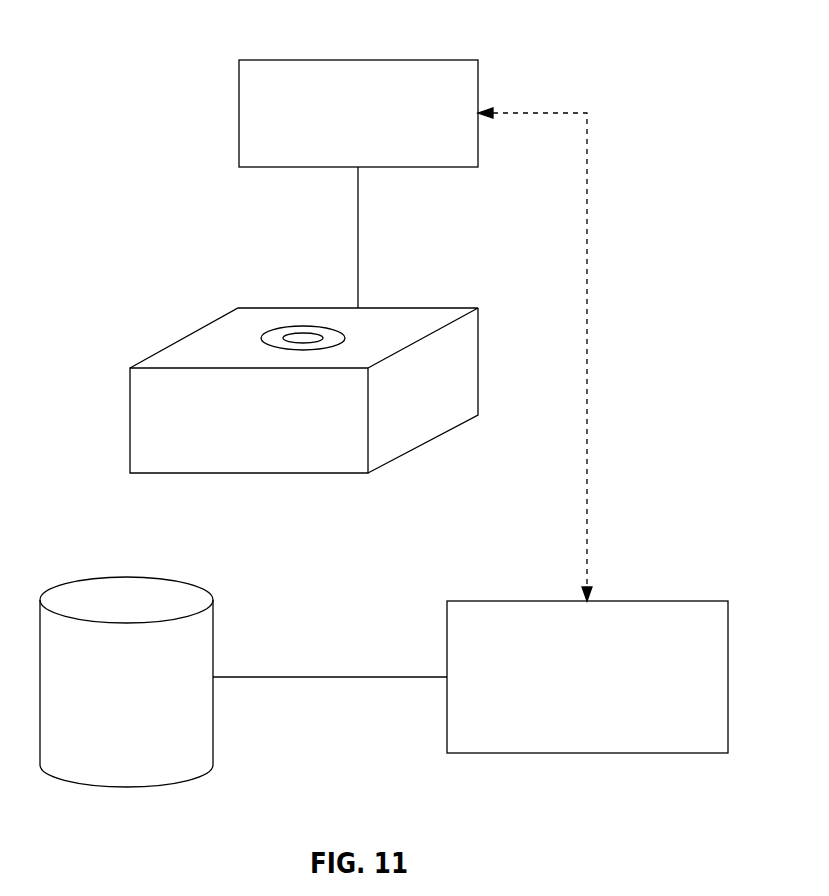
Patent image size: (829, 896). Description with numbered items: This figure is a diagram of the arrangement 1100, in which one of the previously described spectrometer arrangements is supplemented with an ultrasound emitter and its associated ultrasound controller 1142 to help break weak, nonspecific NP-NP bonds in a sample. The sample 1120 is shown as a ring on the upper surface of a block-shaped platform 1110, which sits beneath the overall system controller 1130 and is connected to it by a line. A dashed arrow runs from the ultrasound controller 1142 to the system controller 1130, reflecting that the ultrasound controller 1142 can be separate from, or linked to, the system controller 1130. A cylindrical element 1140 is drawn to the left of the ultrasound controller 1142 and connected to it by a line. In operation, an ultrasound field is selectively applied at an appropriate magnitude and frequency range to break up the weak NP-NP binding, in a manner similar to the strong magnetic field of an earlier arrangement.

The arrangement 1100 is at (587, 66).
The platform / housing 1110 is at (257, 455).
The sample 1120 is at (290, 328).
The system controller 1130 is at (400, 60).
The data storage 1140 is at (127, 577).
The ultrasound controller 1142 is at (650, 601).